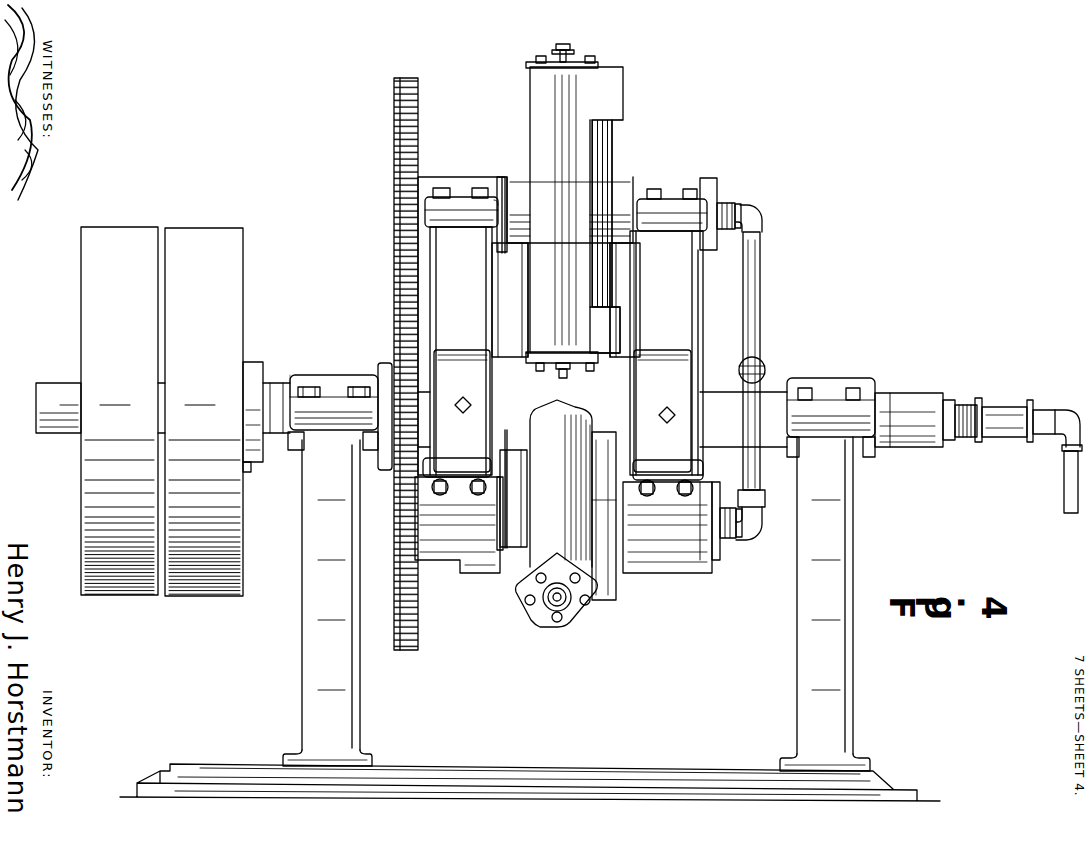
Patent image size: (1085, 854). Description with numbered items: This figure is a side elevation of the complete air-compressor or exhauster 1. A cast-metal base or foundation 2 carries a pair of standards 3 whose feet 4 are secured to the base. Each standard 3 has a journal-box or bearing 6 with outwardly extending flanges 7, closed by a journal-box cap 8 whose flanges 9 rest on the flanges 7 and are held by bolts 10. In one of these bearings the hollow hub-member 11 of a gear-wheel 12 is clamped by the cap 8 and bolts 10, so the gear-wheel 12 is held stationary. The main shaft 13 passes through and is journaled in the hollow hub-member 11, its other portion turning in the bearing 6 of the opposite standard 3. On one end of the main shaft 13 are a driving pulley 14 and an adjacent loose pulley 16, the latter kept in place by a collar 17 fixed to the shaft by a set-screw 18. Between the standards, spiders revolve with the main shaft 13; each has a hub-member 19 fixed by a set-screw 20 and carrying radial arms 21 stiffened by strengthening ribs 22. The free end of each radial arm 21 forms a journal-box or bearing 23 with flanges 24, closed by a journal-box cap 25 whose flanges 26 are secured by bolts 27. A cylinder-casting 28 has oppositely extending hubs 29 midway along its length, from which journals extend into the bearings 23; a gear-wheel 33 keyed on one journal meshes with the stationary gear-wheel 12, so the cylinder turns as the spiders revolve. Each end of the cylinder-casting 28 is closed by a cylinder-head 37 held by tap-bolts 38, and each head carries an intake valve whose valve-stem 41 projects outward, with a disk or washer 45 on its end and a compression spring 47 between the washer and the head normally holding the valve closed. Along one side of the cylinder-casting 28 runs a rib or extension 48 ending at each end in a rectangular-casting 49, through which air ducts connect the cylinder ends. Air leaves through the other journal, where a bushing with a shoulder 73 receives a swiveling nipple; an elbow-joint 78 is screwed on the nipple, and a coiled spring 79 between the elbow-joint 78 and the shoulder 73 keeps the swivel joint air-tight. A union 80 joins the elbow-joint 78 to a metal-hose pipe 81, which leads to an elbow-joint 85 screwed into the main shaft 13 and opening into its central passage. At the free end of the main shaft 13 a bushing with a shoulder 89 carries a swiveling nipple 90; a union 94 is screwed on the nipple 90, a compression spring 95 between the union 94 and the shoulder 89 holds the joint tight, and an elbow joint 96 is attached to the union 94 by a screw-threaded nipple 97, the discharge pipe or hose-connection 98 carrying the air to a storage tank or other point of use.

The air-compressor or exhauster 1 is at (351, 286).
The base or foundation 2 is at (203, 770).
The standards 3 is at (352, 703).
The feet 4 is at (372, 759).
The journal-box or bearing 6 is at (292, 450).
The flanges 7 is at (332, 417).
The journal-box cap 8 is at (330, 380).
The flanges 9 is at (345, 397).
The bolts 10 is at (308, 386).
The hollow hub-member 11 is at (272, 392).
The gear-wheel 12 is at (383, 363).
The main shaft 13 is at (40, 407).
The driving pulley 14 is at (86, 293).
The loose pulley 16 is at (232, 256).
The collar 17 is at (258, 362).
The set-screw 18 is at (249, 472).
The hub-member 19 is at (478, 360).
The set-screw 20 is at (562, 411).
The radial arms 21 is at (480, 316).
The strengthening ribs 22 is at (436, 295).
The journal-box or bearing 23 is at (512, 225).
The flanges 24 is at (470, 228).
The journal-box cap 25 is at (438, 178).
The flanges 26 is at (490, 197).
The bolts 27 is at (445, 187).
The cylinder-casting 28 is at (532, 97).
The hubs 29 is at (618, 243).
The gear-wheels 33 is at (394, 130).
The cylinder-head 37 is at (535, 62).
The tap-bolts or screws 38 is at (596, 60).
The valve-stem 41 is at (563, 50).
The disk or washer 45 is at (572, 47).
The compression spring 47 is at (554, 50).
The rib or extension 48 is at (613, 120).
The rectangular-casting 49 is at (620, 90).
The shoulder 73 is at (728, 203).
The elbow-joint 78 is at (770, 214).
The coiled or compression spring 79 is at (742, 212).
The union 80 is at (765, 497).
The pipe or hose-connection 81 is at (762, 288).
The elbow-joints 85 is at (765, 368).
The shoulder 89 is at (955, 400).
The nipple 90 is at (978, 442).
The union 94 is at (1005, 407).
The coiled or compression spring 95 is at (965, 438).
The elbow joint 96 is at (1031, 443).
The screw-threaded nipple 97 is at (1055, 410).
The pipe or hose-connection 98 is at (1064, 505).